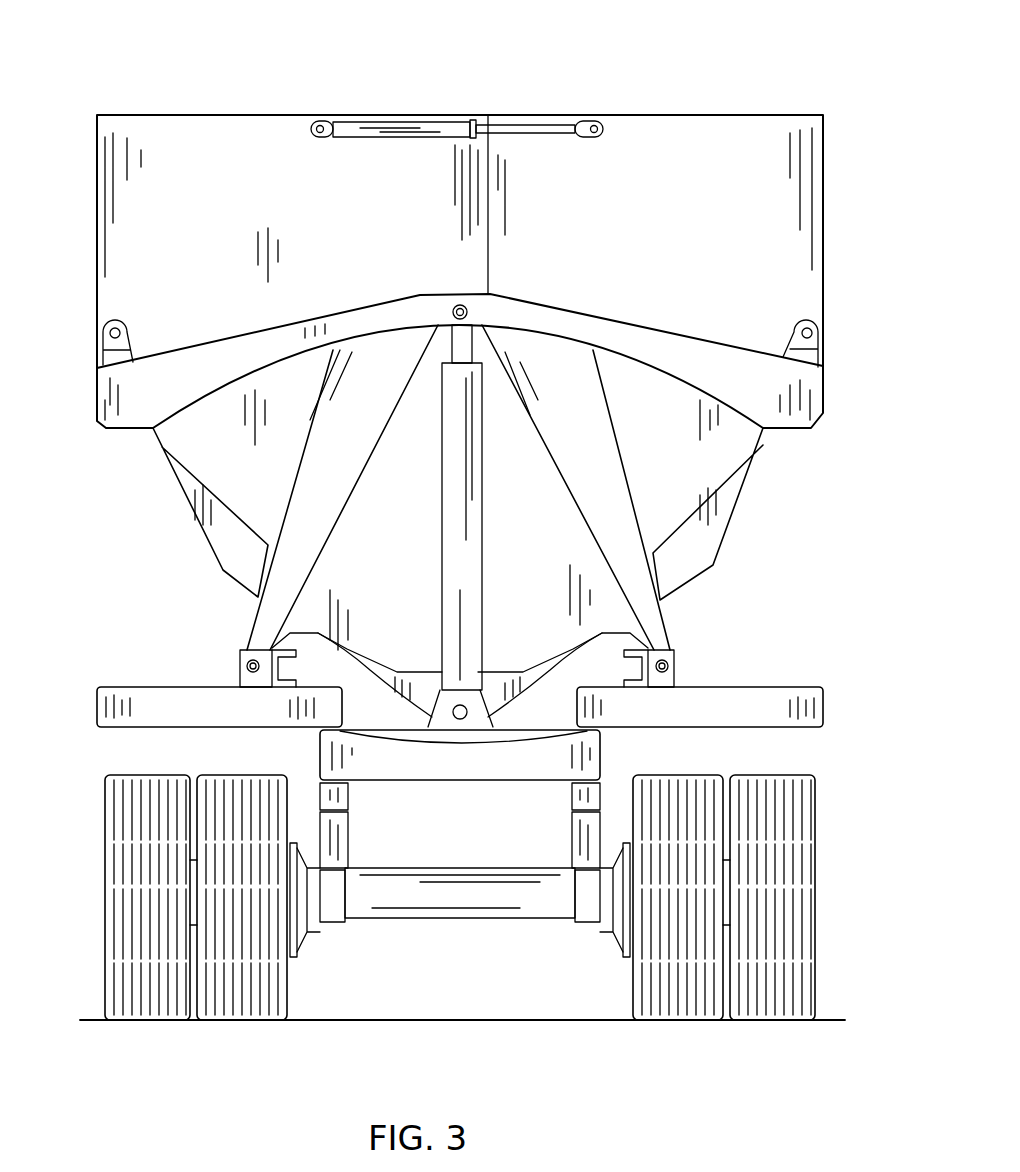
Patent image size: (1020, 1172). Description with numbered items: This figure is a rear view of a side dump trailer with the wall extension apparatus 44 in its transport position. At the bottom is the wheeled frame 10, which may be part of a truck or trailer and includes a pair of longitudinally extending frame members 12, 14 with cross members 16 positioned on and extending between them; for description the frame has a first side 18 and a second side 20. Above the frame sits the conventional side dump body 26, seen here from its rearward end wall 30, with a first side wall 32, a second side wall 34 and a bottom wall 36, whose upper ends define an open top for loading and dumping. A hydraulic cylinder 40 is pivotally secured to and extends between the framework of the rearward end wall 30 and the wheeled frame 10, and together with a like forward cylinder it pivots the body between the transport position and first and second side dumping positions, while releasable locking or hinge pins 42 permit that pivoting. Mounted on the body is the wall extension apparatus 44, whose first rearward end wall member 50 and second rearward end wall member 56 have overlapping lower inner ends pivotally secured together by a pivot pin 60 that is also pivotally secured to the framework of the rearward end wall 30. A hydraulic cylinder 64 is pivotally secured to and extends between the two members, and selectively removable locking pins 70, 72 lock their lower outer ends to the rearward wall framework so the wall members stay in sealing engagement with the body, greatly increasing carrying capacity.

The wheeled frame 10 is at (760, 756).
The longitudinal extending frame member 12 is at (318, 752).
The longitudinal extending frame member 14 is at (603, 757).
The cross members 16 is at (483, 763).
The first side 18 is at (95, 722).
The second side 20 is at (833, 705).
The side dump body 26 is at (190, 549).
The rearward end wall 30 is at (522, 492).
The first side wall 32 is at (217, 495).
The second side wall 34 is at (700, 503).
The bottom wall 36 is at (496, 668).
The hydraulic cylinder 40 is at (455, 544).
The releasable locking or hinge pins 42 is at (243, 660).
The wall extension apparatus 44 is at (686, 100).
The first rearward end wall member 50 is at (338, 204).
The second rearward end wall member 56 is at (672, 233).
The pivot pin 60 is at (466, 306).
The hydraulic cylinder 64 is at (413, 130).
The locking pin 70 is at (125, 322).
The locking pin 72 is at (815, 332).